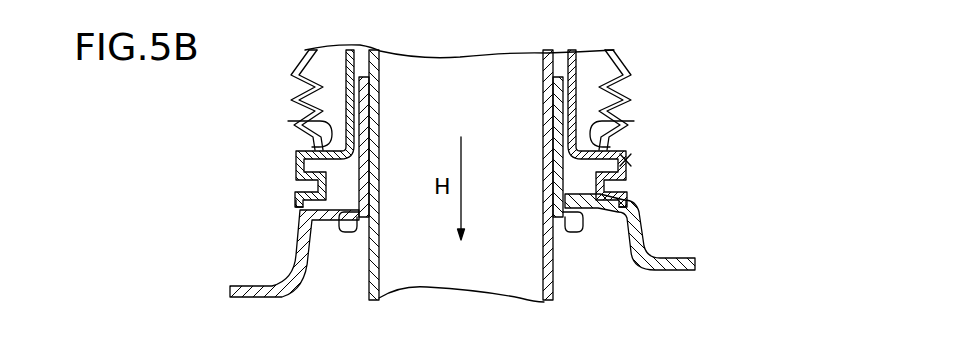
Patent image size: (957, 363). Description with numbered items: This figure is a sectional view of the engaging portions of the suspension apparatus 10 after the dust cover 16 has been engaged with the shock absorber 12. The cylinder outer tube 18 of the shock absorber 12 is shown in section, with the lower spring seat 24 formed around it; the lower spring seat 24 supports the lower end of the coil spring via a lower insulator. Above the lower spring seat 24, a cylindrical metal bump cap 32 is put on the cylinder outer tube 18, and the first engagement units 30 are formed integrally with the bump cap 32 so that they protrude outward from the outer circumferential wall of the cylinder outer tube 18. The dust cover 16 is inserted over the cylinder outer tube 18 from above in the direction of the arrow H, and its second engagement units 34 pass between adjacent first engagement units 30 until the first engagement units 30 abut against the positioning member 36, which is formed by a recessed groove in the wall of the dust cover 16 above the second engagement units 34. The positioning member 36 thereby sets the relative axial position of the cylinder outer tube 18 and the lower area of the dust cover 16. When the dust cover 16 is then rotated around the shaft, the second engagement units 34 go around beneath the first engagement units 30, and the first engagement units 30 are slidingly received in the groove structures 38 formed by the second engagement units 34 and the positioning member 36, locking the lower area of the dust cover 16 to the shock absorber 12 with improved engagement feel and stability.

The suspension apparatus 10 is at (727, 89).
The shock absorber 12 is at (567, 272).
The dust cover 16 is at (632, 66).
The cylinder outer tube 18 is at (369, 283).
The lower spring seat 24 is at (690, 262).
The first engagement units 30 is at (302, 148).
The bump cap 32 is at (580, 68).
The second engagement units 34 is at (293, 204).
The positioning member 36 is at (300, 120).
The groove structures 38 is at (629, 160).